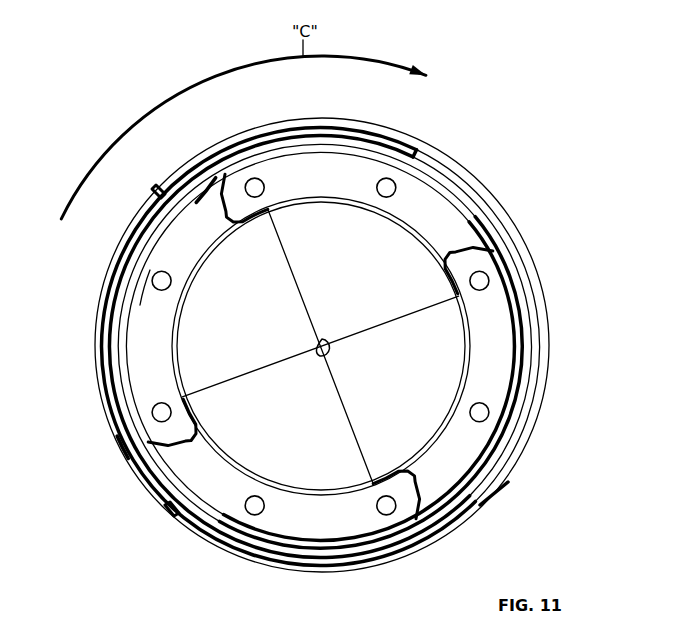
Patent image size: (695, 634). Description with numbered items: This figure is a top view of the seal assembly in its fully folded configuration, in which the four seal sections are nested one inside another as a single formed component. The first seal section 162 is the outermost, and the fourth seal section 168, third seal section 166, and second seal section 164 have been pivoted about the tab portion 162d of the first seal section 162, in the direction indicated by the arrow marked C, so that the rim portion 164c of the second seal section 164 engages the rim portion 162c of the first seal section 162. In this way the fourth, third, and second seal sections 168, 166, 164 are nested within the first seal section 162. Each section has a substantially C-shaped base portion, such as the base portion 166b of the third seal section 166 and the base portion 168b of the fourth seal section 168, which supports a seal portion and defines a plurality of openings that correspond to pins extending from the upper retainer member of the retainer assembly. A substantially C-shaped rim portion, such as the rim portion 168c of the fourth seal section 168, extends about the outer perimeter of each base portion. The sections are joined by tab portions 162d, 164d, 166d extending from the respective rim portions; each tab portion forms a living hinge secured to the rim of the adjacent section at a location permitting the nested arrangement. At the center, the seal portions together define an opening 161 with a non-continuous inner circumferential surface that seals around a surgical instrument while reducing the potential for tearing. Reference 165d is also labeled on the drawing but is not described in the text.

The opening 161 is at (331, 344).
The first seal section 162 is at (279, 120).
The rim portion 162c is at (206, 162).
The tab portion 162d is at (158, 191).
The second seal section 164 is at (104, 428).
The rim portion 164c is at (124, 456).
The tab portion 164d is at (172, 512).
The ring end 165d is at (508, 482).
The third seal section 166 is at (222, 555).
The base portion 166b is at (442, 207).
The tab portion 166d is at (420, 540).
The fourth seal section 168 is at (553, 390).
The base portion 168b is at (148, 298).
The rim portion 168c is at (550, 340).